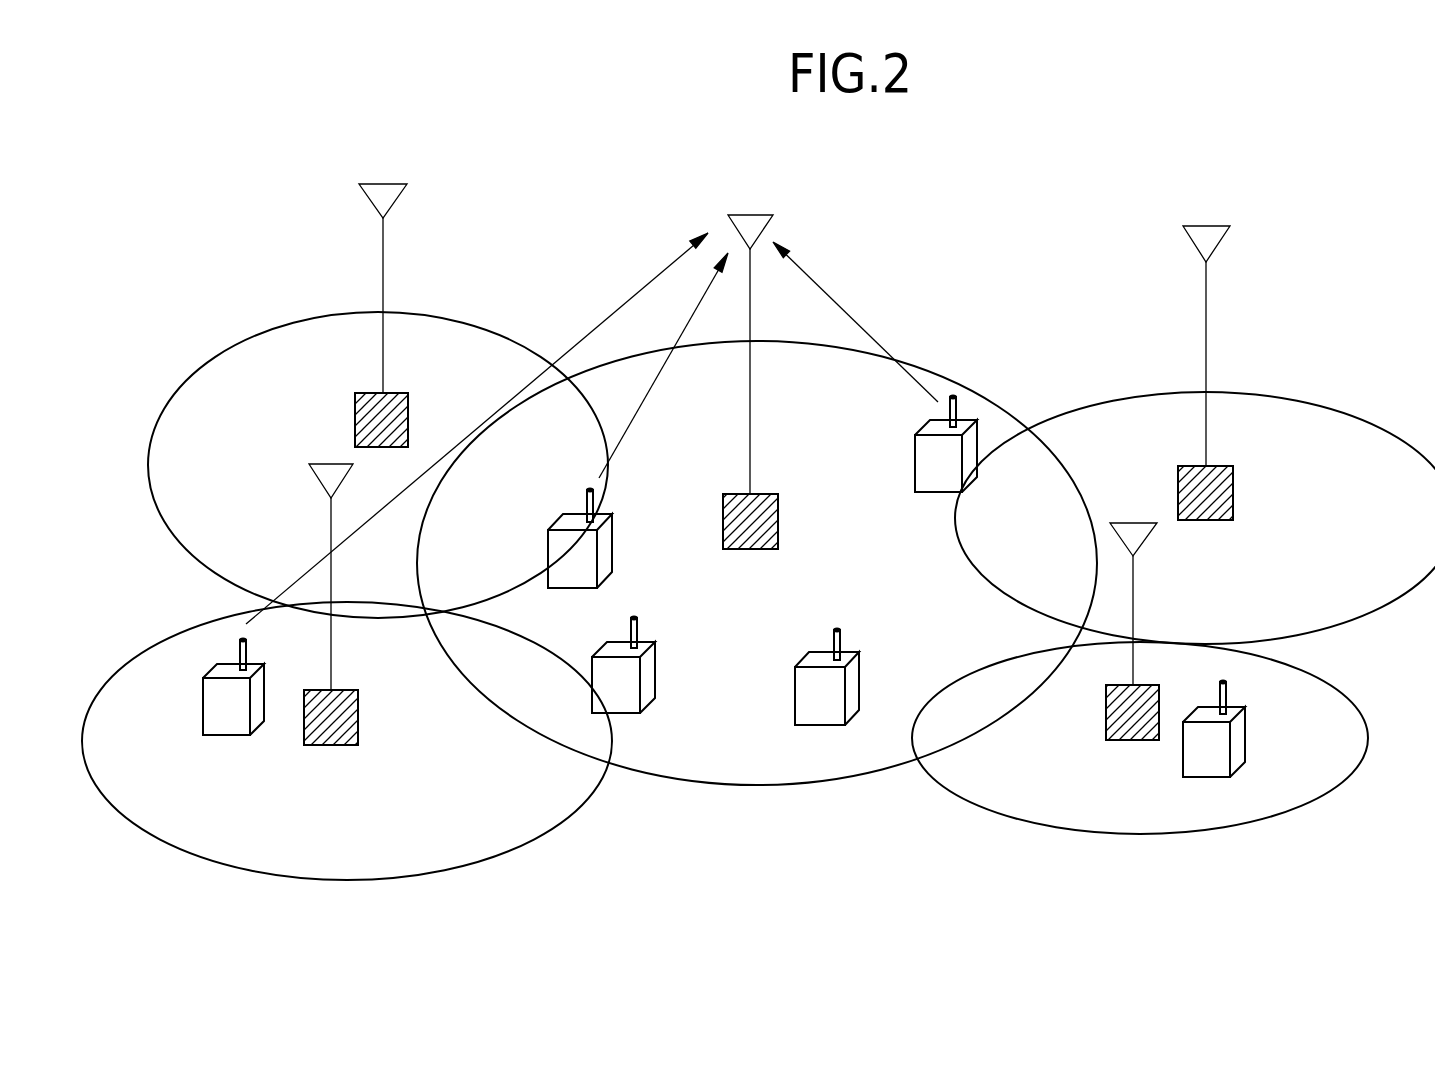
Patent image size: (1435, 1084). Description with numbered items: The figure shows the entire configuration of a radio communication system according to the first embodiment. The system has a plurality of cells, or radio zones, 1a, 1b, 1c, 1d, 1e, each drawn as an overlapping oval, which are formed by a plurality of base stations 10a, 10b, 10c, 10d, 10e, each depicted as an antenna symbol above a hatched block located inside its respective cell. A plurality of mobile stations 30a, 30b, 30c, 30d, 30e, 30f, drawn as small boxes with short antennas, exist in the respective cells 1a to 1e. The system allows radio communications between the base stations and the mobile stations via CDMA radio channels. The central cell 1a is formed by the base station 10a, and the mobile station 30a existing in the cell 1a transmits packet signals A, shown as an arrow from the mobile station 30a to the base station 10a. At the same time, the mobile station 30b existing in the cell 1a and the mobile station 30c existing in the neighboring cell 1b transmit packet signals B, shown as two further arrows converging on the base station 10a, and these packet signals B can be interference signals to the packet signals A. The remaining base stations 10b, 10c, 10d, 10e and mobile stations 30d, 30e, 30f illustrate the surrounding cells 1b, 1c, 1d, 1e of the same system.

The base station 10a is at (793, 187).
The base station 10b is at (352, 746).
The base station 10c is at (381, 181).
The base station 10d is at (1233, 497).
The base station 10e is at (1107, 741).
The mobile station 30a is at (977, 430).
The mobile station 30b is at (612, 557).
The mobile station 30c is at (218, 736).
The mobile station 30d is at (655, 672).
The mobile station 30e is at (853, 653).
The mobile station 30f is at (1203, 779).
The cell 1a is at (745, 784).
The cell 1b is at (307, 881).
The cell 1c is at (466, 322).
The cell 1d is at (1341, 410).
The cell 1e is at (1149, 836).
The packet signals A is at (830, 292).
The packet signals B is at (693, 322).